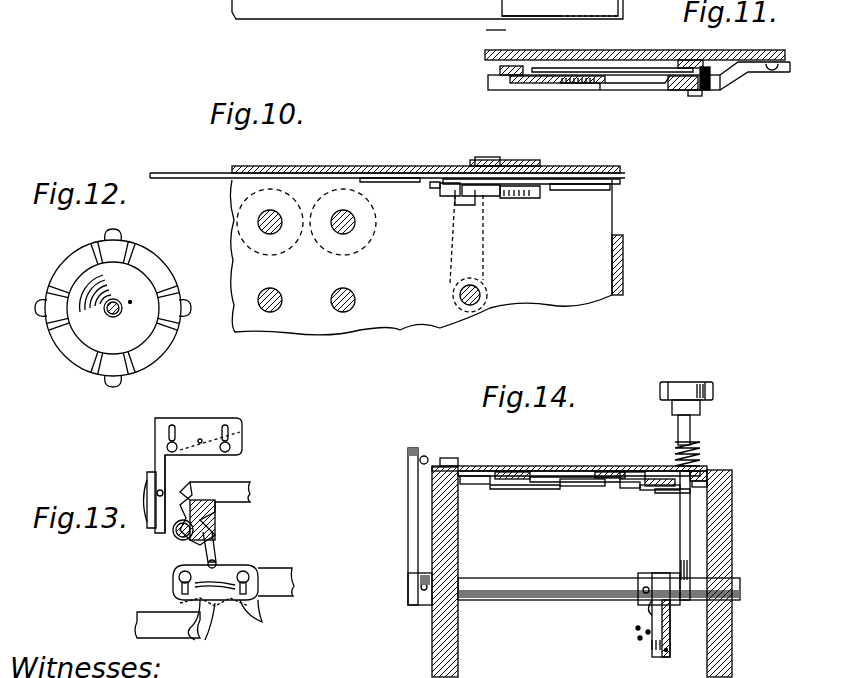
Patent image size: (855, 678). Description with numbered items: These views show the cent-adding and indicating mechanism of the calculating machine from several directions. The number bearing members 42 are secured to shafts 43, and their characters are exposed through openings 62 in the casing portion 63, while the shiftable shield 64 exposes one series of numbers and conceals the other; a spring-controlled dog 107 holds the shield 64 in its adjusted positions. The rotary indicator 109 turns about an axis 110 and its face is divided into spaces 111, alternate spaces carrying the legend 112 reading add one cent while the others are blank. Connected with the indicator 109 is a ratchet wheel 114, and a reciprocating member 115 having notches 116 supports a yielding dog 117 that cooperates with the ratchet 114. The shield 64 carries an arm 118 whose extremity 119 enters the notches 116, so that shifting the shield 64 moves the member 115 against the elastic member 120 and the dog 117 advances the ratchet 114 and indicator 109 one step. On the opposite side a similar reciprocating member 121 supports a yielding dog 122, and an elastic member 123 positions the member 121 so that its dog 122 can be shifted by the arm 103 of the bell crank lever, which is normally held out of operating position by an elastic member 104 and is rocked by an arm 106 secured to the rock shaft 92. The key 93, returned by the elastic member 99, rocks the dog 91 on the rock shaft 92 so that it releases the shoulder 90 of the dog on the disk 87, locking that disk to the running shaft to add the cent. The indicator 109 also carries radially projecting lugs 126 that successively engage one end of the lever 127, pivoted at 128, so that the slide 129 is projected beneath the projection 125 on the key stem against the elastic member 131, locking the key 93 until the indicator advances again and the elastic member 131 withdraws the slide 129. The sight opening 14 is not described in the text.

In FIG. 11, the display window 14 is at (495, 0).
In FIG. 11, the projection 125 is at (531, 9).
In FIG. 11, the elastic member 131 is at (589, 9).
In FIG. 10, the number bearing member 42 is at (310, 250).
In FIG. 10, the shaft 43 is at (266, 235).
In FIG. 10, the opening 62 is at (320, 172).
In FIG. 11, the casing portion 63 is at (770, 61).
In FIG. 10, the casing portion 63 is at (256, 172).
In FIG. 14, the casing portion 63 is at (720, 468).
In FIG. 10, the shield 64 is at (200, 177).
In FIG. 14, the disk 87 is at (665, 650).
In FIG. 14, the shoulder 90 is at (640, 627).
In FIG. 14, the dog 91 is at (665, 590).
In FIG. 10, the rock shaft 92 is at (480, 290).
In FIG. 14, the rock shaft 92 is at (524, 586).
In FIG. 14, the key 93 is at (700, 392).
In FIG. 14, the elastic member 99 is at (700, 462).
In FIG. 10, the arm 103 is at (532, 166).
In FIG. 14, the arm 103 is at (460, 462).
In FIG. 14, the elastic member 104 is at (420, 456).
In FIG. 10, the arm 106 is at (455, 270).
In FIG. 14, the arm 106 is at (408, 528).
In FIG. 10, the spring-controlled dog 107 is at (376, 172).
In FIG. 10, the rotary indicator 109 is at (450, 168).
In FIG. 12, the rotary indicator 109 is at (112, 340).
In FIG. 12, the axis 110 is at (114, 304).
In FIG. 13, the axis 110 is at (172, 534).
In FIG. 12, the space 111 is at (130, 254).
In FIG. 14, the space 111 is at (604, 473).
In FIG. 12, the legend 112 is at (152, 274).
In FIG. 10, the ratchet wheel 114 is at (472, 165).
In FIG. 13, the ratchet wheel 114 is at (185, 488).
In FIG. 14, the ratchet wheel 114 is at (560, 476).
In FIG. 11, the reciprocating member 115 is at (642, 88).
In FIG. 13, the reciprocating member 115 is at (258, 608).
In FIG. 14, the reciprocating member 115 is at (630, 490).
In FIG. 11, the notch 116 is at (590, 88).
In FIG. 13, the notch 116 is at (205, 632).
In FIG. 10, the dog 117 is at (514, 192).
In FIG. 13, the dog 117 is at (216, 550).
In FIG. 11, the arm 118 is at (530, 90).
In FIG. 10, the arm 118 is at (440, 190).
In FIG. 13, the arm 118 is at (135, 632).
In FIG. 14, the arm 118 is at (664, 492).
In FIG. 13, the extremity 119 is at (175, 612).
In FIG. 11, the elastic member 120 is at (658, 68).
In FIG. 13, the elastic member 120 is at (247, 570).
In FIG. 13, the reciprocating member 121 is at (198, 428).
In FIG. 14, the reciprocating member 121 is at (485, 488).
In FIG. 10, the dog 122 is at (460, 190).
In FIG. 13, the dog 122 is at (150, 514).
In FIG. 14, the dog 122 is at (550, 490).
In FIG. 13, the elastic member 123 is at (245, 430).
In FIG. 10, the lug 126 is at (412, 178).
In FIG. 12, the lug 126 is at (92, 250).
In FIG. 14, the lug 126 is at (628, 470).
In FIG. 11, the lever 127 is at (704, 60).
In FIG. 14, the lever 127 is at (654, 470).
In FIG. 11, the pivot 128 is at (700, 96).
In FIG. 14, the slide 129 is at (712, 478).